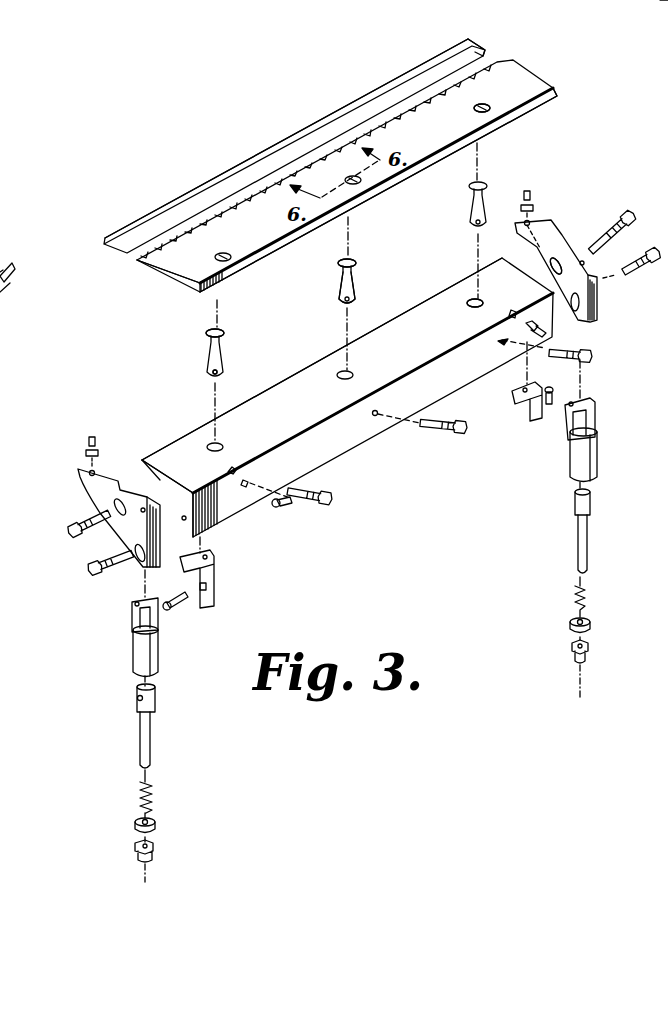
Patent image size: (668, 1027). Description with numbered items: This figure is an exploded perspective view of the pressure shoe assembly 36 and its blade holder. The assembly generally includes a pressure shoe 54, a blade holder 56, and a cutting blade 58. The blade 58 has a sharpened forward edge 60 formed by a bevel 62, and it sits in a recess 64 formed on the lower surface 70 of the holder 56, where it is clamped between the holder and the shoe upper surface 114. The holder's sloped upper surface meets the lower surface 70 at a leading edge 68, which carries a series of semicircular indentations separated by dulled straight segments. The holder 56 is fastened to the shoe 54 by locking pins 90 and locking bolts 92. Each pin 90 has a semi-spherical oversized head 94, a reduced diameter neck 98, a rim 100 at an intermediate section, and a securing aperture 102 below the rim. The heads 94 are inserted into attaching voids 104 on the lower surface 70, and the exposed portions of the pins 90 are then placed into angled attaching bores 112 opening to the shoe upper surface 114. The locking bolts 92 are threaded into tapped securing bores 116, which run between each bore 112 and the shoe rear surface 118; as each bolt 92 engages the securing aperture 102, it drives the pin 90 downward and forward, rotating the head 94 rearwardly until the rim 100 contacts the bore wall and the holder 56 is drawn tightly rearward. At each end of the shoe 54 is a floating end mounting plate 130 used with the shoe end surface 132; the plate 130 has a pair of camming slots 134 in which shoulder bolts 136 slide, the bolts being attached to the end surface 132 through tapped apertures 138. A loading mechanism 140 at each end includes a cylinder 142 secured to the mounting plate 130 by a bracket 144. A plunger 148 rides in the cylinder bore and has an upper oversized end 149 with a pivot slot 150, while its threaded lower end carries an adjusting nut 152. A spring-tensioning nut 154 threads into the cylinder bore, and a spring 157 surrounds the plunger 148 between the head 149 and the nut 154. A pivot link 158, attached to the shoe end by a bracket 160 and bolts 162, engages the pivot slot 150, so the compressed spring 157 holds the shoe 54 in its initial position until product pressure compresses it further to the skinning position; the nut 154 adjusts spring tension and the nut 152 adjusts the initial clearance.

The pressure shoe assembly 36 is at (614, 104).
The pressure shoe 54 is at (348, 450).
The blade holder 56 is at (538, 72).
The cutting blade 58 is at (477, 44).
The sharpened forward edge 60 is at (400, 75).
The bevel 62 is at (223, 172).
The recess 64 is at (152, 267).
The leading edge 68 is at (140, 257).
The lower surface 70 is at (518, 120).
The locking pin 90 is at (472, 197).
The locking bolt 92 is at (332, 501).
The head 94 is at (353, 255).
The neck 98 is at (224, 338).
The rim 100 is at (353, 278).
The securing aperture 102 is at (212, 375).
The attaching void 104 is at (485, 102).
The angled attaching bore 112 is at (467, 305).
The shoe upper surface 114 is at (312, 368).
The tapped securing bore 116 is at (498, 341).
The shoe rear surface 118 is at (372, 427).
The end mounting plate 130 is at (600, 307).
The end surface 132 is at (177, 493).
The camming slot 134 is at (540, 268).
The shoulder bolt 136 is at (657, 257).
The tapped aperture 138 is at (200, 522).
The mechanism 140 is at (115, 650).
The cylinder 142 is at (160, 658).
The bracket 144 is at (133, 611).
The plunger 148 is at (152, 740).
The upper oversized end 149 is at (158, 706).
The pivot slot 150 is at (137, 699).
The adjusting nut 152 is at (135, 847).
The spring-tensioning nut 154 is at (158, 826).
The spring 157 is at (140, 797).
The pivot link 158 is at (177, 607).
The bracket 160 is at (212, 562).
The bolt 162 is at (205, 588).